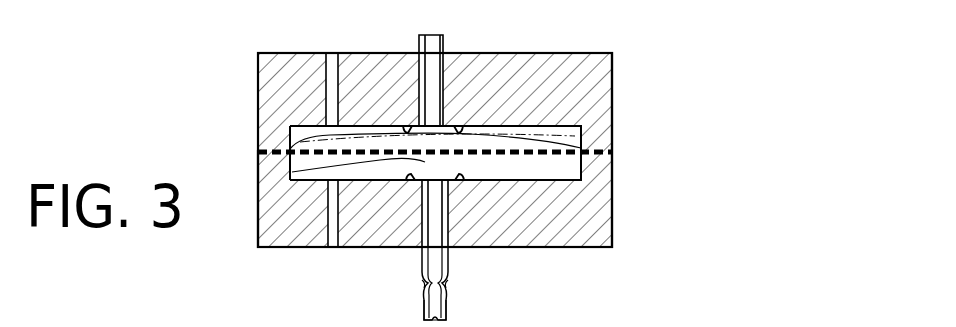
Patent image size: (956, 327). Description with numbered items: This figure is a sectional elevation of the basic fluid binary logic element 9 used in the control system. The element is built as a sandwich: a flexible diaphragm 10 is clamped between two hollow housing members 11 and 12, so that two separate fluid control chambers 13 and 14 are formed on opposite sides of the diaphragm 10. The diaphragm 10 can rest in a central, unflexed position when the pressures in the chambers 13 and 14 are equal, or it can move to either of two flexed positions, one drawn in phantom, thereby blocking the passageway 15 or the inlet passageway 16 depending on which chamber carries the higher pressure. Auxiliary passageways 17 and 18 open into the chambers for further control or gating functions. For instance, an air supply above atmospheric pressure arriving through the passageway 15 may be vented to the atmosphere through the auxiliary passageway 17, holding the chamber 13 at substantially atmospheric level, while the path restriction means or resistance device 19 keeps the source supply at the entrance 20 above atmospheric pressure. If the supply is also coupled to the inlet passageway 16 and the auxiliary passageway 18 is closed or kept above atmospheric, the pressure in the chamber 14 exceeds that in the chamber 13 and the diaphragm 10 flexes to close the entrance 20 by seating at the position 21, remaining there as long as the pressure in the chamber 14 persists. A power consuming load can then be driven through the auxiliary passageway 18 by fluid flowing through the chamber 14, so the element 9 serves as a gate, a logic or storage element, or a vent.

The fluid binary logic element 9 is at (258, 92).
The flexible diaphragm 10 is at (259, 153).
The hollow housing member 11 is at (597, 228).
The hollow housing member 12 is at (598, 67).
The fluid control chamber 13 is at (555, 167).
The fluid control chamber 14 is at (558, 135).
The passageway 15 is at (450, 264).
The inlet passageway 16 is at (434, 36).
The auxiliary passageway 17 is at (333, 248).
The auxiliary passageway 18 is at (333, 53).
The path restriction means 19 is at (450, 284).
The entrance 20 is at (422, 302).
The seating position 21 is at (430, 163).